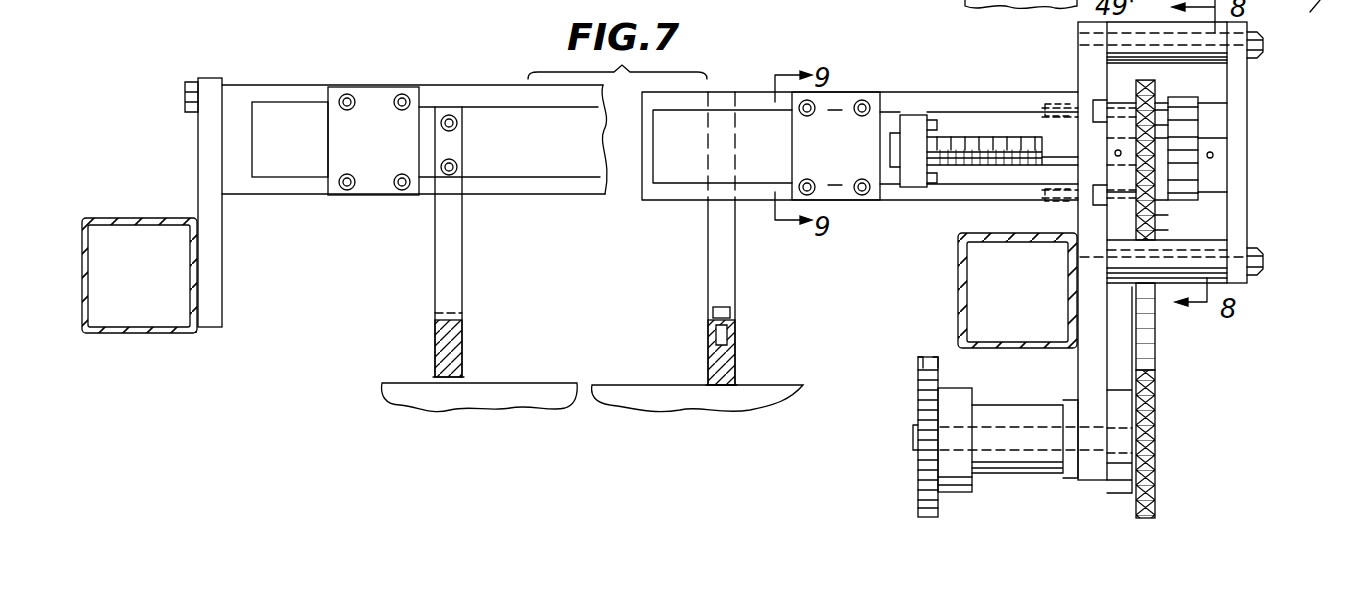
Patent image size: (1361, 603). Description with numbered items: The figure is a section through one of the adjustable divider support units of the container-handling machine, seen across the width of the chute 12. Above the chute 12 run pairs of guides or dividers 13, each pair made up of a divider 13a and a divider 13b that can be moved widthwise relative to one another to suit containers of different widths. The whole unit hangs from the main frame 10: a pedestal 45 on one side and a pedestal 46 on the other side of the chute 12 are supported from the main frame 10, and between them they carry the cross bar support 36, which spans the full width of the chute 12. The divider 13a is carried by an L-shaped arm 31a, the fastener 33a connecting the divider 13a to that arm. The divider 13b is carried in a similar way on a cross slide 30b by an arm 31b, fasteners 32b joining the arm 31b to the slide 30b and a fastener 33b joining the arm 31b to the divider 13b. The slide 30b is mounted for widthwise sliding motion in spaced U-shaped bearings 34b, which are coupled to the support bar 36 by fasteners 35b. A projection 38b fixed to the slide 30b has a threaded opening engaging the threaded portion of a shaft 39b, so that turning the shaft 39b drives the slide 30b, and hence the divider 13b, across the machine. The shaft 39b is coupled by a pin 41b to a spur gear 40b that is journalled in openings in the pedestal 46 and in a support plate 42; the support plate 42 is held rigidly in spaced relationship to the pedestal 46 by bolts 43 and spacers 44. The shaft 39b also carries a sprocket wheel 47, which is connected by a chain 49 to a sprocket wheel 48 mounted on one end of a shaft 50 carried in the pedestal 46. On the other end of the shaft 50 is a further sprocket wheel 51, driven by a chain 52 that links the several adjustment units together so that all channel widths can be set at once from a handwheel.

The main frame 10 is at (92, 218).
The support pedestal 45 is at (200, 188).
The cross slide 30b is at (568, 163).
The cross bar support 36 is at (452, 93).
The U-shaped bearings 34b is at (370, 170).
The fasteners 35b is at (402, 111).
The arm 31b is at (460, 234).
The fasteners 32b is at (457, 126).
The fastener 33b is at (448, 297).
The divider 13b is at (462, 355).
The guides or dividers 13 is at (433, 355).
The chute 12 is at (478, 400).
The L-shaped arm 31a is at (710, 233).
The fastener 33a is at (713, 310).
The divider 13a is at (708, 366).
The projection 38b is at (927, 115).
The shaft 39b is at (1027, 138).
The support pedestal 46 is at (1078, 60).
The support plate 42 is at (1280, 182).
The spacers 44 is at (1187, 275).
The bolts 43 is at (1263, 52).
The chain 49 is at (1148, 350).
The sprocket wheel 48 is at (1150, 475).
The spur gear 40b is at (1187, 123).
The pin 41b is at (1213, 155).
The sprocket wheel 47 is at (1153, 223).
The shaft 50 is at (1022, 460).
The sprocket wheel 51 is at (928, 385).
The chain 52 is at (927, 490).